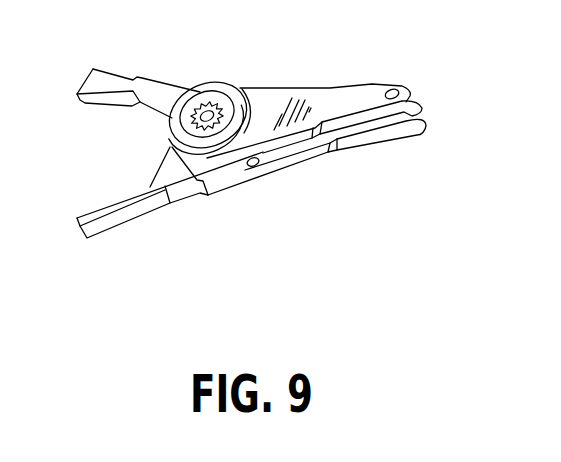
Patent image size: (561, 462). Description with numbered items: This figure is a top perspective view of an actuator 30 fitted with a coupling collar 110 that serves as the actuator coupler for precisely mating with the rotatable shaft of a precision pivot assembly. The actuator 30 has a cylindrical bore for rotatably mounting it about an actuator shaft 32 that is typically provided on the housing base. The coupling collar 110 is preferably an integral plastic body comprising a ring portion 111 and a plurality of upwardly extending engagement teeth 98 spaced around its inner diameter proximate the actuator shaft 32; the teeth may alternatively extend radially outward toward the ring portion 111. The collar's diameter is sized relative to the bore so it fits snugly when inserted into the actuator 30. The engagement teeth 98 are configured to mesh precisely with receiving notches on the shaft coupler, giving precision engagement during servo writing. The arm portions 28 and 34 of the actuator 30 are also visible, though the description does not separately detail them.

The upper handle arm 28 is at (394, 142).
The actuator 30 is at (262, 178).
The actuator shaft 32 is at (175, 113).
The lower jaw 34 is at (110, 220).
The engagement teeth 98 is at (218, 100).
The coupling collar 110 is at (273, 92).
The ring portion 111 is at (216, 165).